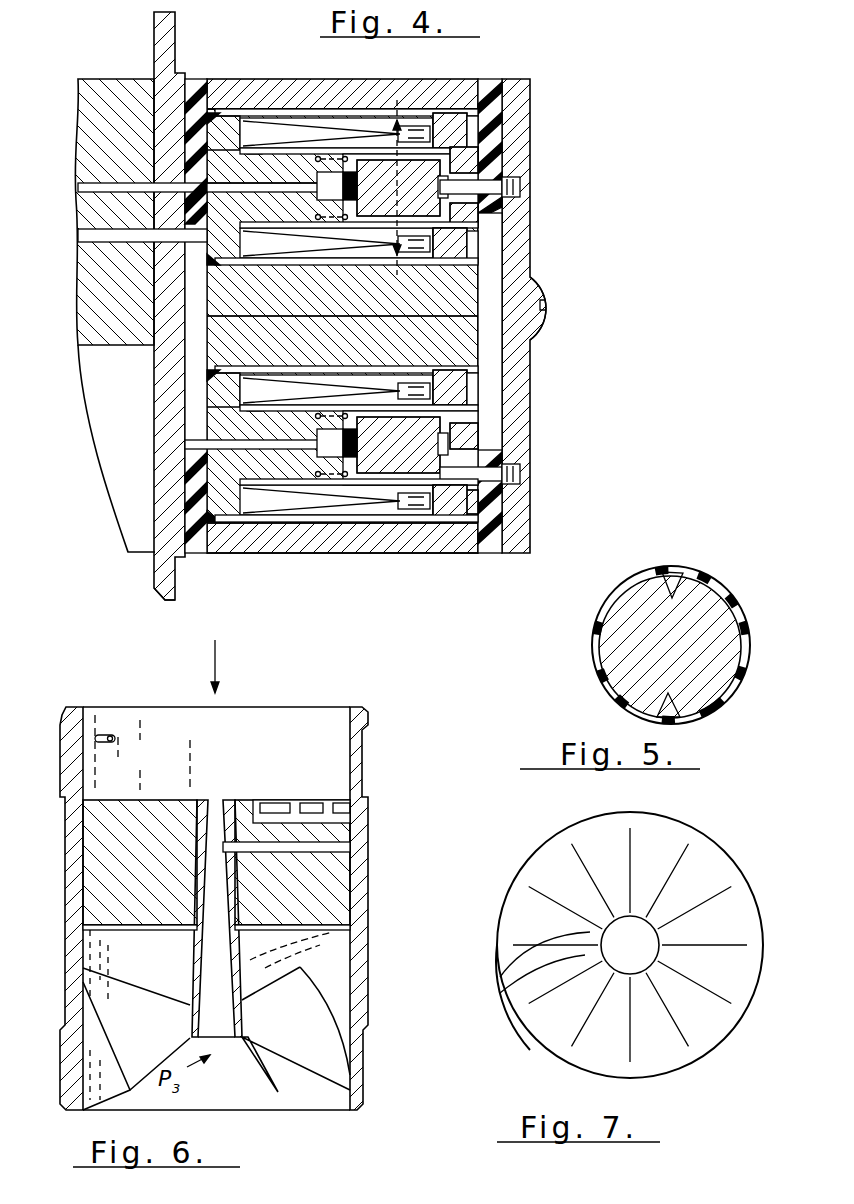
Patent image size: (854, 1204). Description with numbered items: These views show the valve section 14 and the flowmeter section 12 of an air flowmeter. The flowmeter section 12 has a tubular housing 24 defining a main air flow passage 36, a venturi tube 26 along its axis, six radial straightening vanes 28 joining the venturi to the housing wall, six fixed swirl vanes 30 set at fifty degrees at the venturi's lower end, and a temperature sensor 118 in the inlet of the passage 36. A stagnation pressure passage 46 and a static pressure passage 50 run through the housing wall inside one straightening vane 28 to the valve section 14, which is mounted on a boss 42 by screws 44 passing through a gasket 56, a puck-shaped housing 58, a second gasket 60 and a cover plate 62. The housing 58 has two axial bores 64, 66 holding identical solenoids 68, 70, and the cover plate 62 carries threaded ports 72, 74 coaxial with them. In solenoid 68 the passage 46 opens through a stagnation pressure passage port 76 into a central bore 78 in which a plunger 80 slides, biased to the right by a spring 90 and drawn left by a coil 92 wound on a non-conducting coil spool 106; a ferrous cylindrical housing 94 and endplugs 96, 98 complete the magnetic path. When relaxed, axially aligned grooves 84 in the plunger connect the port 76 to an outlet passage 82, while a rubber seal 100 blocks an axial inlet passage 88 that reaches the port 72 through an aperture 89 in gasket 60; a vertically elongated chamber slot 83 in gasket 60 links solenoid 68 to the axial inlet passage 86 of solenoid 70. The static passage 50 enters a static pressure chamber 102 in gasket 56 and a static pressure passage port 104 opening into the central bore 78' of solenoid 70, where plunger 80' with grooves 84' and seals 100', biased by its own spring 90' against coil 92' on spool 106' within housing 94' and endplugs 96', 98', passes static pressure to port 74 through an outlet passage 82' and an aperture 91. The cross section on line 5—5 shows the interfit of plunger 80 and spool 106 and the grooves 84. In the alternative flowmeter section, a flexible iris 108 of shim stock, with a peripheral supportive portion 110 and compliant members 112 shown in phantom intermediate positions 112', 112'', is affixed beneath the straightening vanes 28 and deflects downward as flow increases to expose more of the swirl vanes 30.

In FIG. 6, the flowmeter section 12 is at (368, 738).
In FIG. 4, the valve section 14 is at (353, 554).
In FIG. 4, the tubular housing 24 is at (170, 32).
In FIG. 6, the venturi tube 26 is at (207, 807).
In FIG. 4, the air straightening vanes 28 is at (112, 78).
In FIG. 6, the air straightening vanes 28 is at (143, 768).
In FIG. 6, the swirl vanes 30 is at (357, 1003).
In FIG. 6, the main air flow passage 36 is at (314, 717).
In FIG. 4, the boss 42 is at (178, 570).
In FIG. 4, the screws 44 is at (548, 295).
In FIG. 4, the stagnation pressure passage 46 is at (78, 186).
In FIG. 6, the stagnation pressure passage 46 is at (370, 815).
In FIG. 4, the static pressure passage 50 is at (76, 233).
In FIG. 6, the static pressure passage 50 is at (370, 845).
In FIG. 4, the gasket 56 is at (193, 78).
In FIG. 4, the puck-shaped housing 58 is at (273, 77).
In FIG. 4, the second gasket 60 is at (488, 78).
In FIG. 4, the cover plate 62 is at (531, 96).
In FIG. 4, the bore 64 is at (472, 258).
In FIG. 4, the bore 66 is at (474, 375).
In FIG. 4, the solenoid 68 is at (335, 107).
In FIG. 5, the solenoid 68 is at (721, 583).
In FIG. 4, the solenoid 70 is at (313, 525).
In FIG. 4, the threaded port 72 is at (520, 181).
In FIG. 4, the threaded port 74 is at (523, 470).
In FIG. 4, the stagnation pressure passage port 76 is at (216, 190).
In FIG. 4, the central bore 78 is at (309, 178).
In FIG. 4, the central bore 78' is at (306, 436).
In FIG. 4, the plunger 80 is at (391, 188).
In FIG. 5, the plunger 80 is at (670, 647).
In FIG. 4, the plunger 80' is at (391, 445).
In FIG. 4, the outlet passage 82 is at (518, 218).
In FIG. 4, the outlet passage 82' is at (517, 506).
In FIG. 4, the chamber slot 83 is at (490, 343).
In FIG. 4, the axially aligned grooves 84 is at (336, 179).
In FIG. 5, the axially aligned grooves 84 is at (620, 617).
In FIG. 4, the grooves 84' is at (336, 438).
In FIG. 4, the axial inlet passage 86 is at (478, 434).
In FIG. 4, the axial inlet passage 88 is at (470, 168).
In FIG. 4, the aperture 89 is at (492, 188).
In FIG. 4, the spring 90 is at (311, 207).
In FIG. 4, the guide 90' is at (311, 466).
In FIG. 4, the aperture 91 is at (493, 477).
In FIG. 4, the coil 92 is at (448, 96).
In FIG. 4, the coil 92' is at (444, 539).
In FIG. 4, the cylindrical housing 94 is at (342, 212).
In FIG. 4, the cylinder body 94' is at (342, 461).
In FIG. 4, the endplug 96 is at (226, 209).
In FIG. 4, the end portion 96' is at (231, 367).
In FIG. 4, the endplug 98 is at (446, 265).
In FIG. 4, the retainer 98' is at (445, 366).
In FIG. 4, the rubber seals 100 is at (422, 192).
In FIG. 4, the rubber seals 100' is at (407, 451).
In FIG. 4, the static pressure chamber 102 is at (187, 340).
In FIG. 4, the static pressure passage port 104 is at (237, 441).
In FIG. 4, the coil spool 106 is at (234, 101).
In FIG. 5, the coil spool 106 is at (635, 645).
In FIG. 4, the coil spool 106' is at (223, 497).
In FIG. 7, the flexible iris 108 is at (713, 833).
In FIG. 6, the flexible iris 108 is at (343, 933).
In FIG. 7, the peripheral supportive portion 110 is at (540, 1028).
In FIG. 6, the peripheral supportive portion 110 is at (97, 907).
In FIG. 7, the compliant members 112 is at (601, 945).
In FIG. 6, the compliant members 112 is at (225, 901).
In FIG. 6, the intermediate position 112' is at (222, 1007).
In FIG. 6, the intermediate position 112'' is at (306, 950).
In FIG. 6, the temperature sensor 118 is at (110, 733).
In FIG. 4, the section line 5— 5 is at (393, 190).